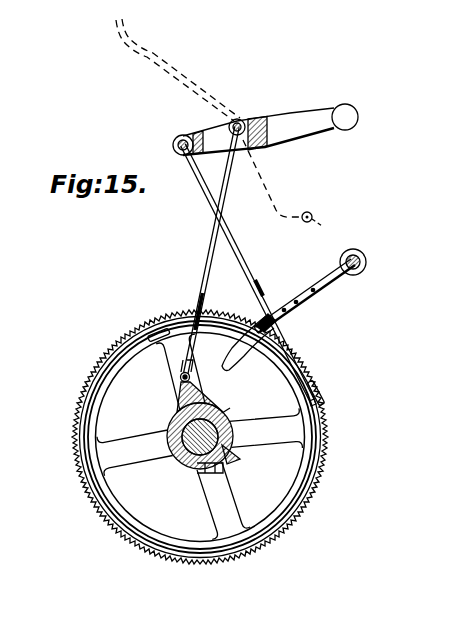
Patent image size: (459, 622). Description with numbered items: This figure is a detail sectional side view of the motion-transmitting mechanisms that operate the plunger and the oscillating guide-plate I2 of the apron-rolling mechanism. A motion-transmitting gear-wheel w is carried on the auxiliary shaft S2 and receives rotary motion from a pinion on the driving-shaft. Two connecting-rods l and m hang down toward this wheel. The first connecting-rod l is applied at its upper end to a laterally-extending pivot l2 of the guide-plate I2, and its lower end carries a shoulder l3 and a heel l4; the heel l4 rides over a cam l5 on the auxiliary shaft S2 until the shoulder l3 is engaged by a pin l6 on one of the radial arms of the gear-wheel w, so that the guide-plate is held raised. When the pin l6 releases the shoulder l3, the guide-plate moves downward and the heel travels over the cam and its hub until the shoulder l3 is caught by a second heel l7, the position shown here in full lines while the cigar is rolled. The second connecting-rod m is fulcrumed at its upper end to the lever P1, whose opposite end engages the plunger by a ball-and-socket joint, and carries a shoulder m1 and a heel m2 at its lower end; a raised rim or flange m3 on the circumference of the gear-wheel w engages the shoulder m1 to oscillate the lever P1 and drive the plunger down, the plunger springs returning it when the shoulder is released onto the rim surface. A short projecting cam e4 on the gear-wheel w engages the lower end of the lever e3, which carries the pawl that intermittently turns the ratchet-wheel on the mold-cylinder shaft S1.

The guide-plate I2 is at (219, 122).
The lever P1 is at (265, 139).
The laterally-extending pivot l2 is at (238, 112).
The connecting-rod l is at (211, 264).
The connecting-rod m is at (241, 253).
The shaft of the mold-cylinder S1 is at (358, 273).
The lever e3 is at (304, 296).
The gear-wheel w is at (72, 452).
The raised rim or flange m3 is at (100, 500).
The cam e4 is at (157, 329).
The shoulder m1 is at (311, 386).
The heel m2 is at (334, 395).
The auxiliary shaft S2 is at (184, 463).
The heel l4 is at (195, 384).
The shoulder l3 is at (181, 375).
The pin l6 is at (182, 381).
The cam l5 is at (220, 412).
The second heel l7 is at (237, 458).